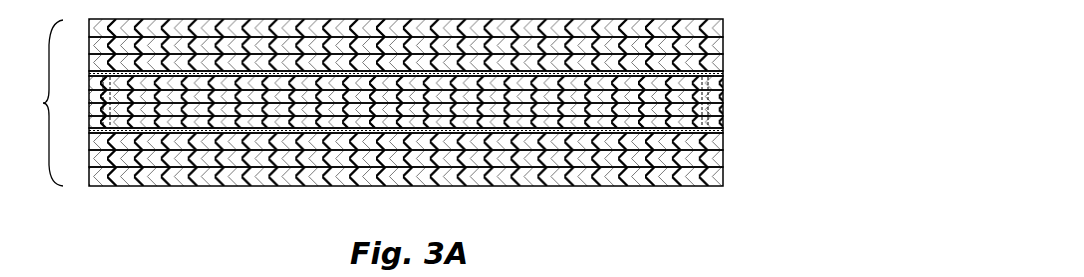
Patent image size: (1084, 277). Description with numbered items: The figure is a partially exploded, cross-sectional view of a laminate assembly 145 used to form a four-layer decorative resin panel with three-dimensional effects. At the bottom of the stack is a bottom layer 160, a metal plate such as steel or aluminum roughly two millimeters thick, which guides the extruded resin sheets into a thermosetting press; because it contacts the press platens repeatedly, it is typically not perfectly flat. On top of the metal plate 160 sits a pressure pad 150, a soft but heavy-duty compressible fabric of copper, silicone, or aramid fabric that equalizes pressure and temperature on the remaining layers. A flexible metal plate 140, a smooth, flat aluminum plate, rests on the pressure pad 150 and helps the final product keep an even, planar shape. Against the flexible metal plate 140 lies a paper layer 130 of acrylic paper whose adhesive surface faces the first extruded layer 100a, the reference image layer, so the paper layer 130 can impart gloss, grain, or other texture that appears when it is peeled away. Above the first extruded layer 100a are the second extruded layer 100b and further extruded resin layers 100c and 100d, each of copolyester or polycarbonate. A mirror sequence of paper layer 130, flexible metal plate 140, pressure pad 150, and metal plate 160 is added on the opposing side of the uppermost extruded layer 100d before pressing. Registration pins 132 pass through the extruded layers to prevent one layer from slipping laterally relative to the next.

The laminate assembly 145 is at (435, 140).
The bottom layer 160 is at (723, 28).
The pressure pad 150 is at (723, 45).
The flexible metal plate 140 is at (723, 64).
The paper layer 130 is at (723, 74).
The extruded resin layer 100d is at (723, 84).
The extruded resin layer 100c is at (723, 96).
The second extruded layer 100b is at (723, 108).
The first extruded layer 100a is at (723, 121).
The registration pins 132 is at (88, 126).